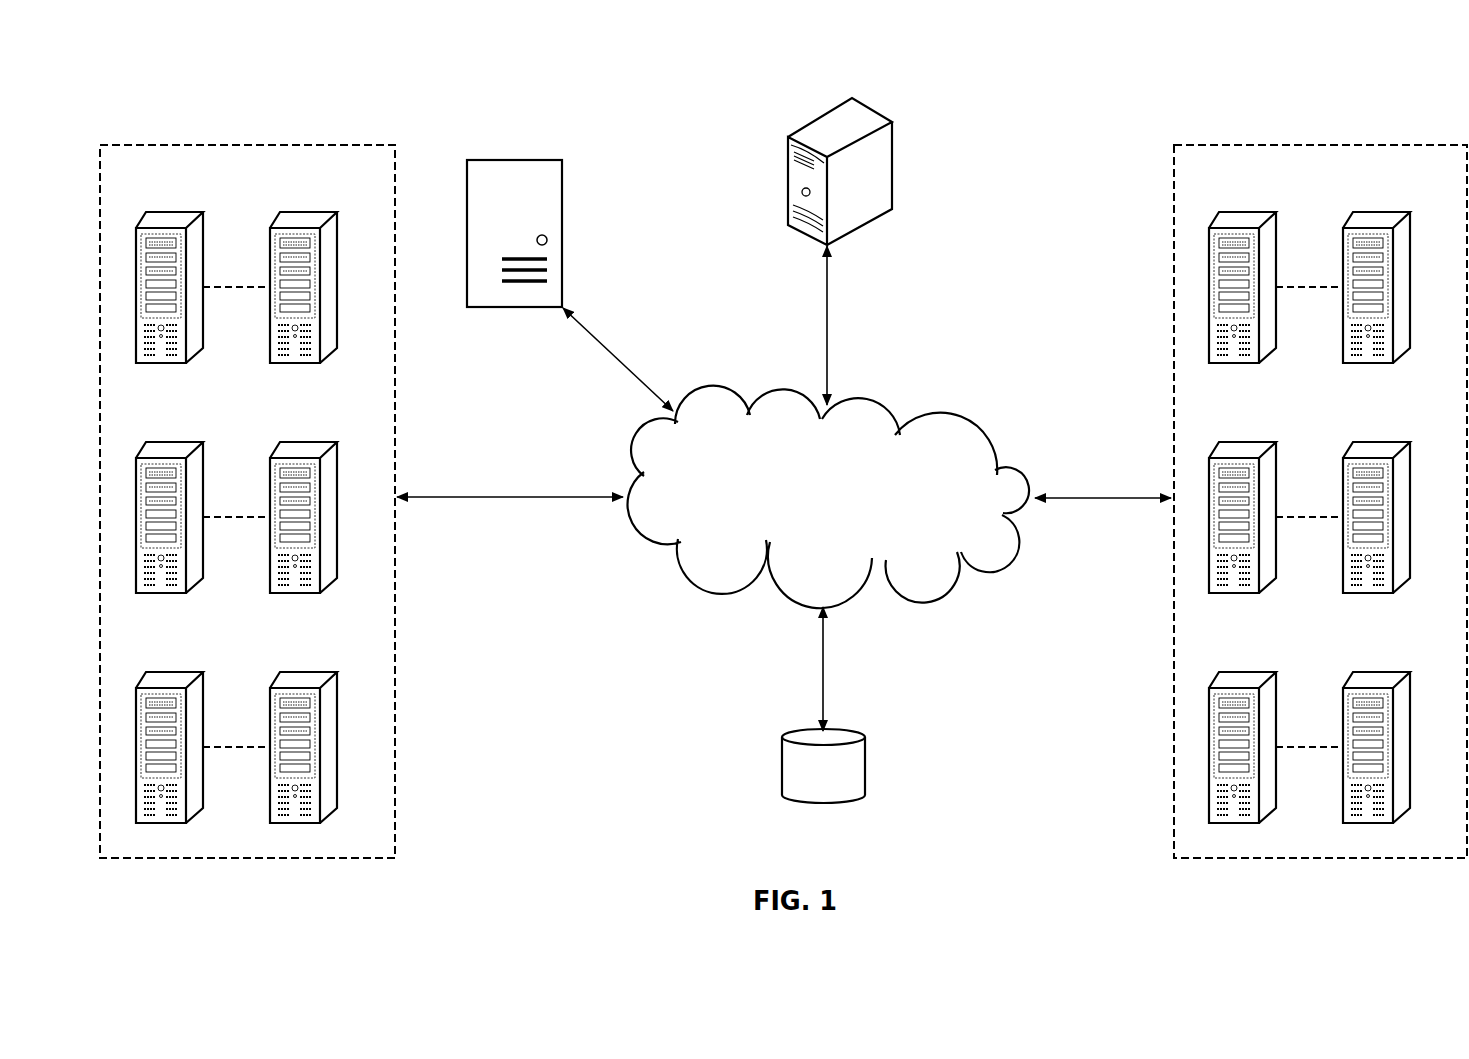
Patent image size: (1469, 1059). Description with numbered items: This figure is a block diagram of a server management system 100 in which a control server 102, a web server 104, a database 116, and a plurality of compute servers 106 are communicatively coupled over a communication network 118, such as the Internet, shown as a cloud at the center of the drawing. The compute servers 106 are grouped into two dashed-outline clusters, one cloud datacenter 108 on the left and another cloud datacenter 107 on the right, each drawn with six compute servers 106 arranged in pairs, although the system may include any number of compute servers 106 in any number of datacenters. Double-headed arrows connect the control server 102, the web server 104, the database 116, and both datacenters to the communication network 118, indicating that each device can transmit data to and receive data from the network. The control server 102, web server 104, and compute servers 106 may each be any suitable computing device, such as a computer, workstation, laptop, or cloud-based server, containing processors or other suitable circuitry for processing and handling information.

The server management system 100 is at (286, 52).
The control server 102 is at (488, 160).
The web server 104 is at (852, 98).
The compute servers 106 is at (787, 501).
The cloud datacenter 107 is at (1316, 145).
The cloud datacenter 108 is at (243, 145).
The database 116 is at (851, 733).
The communication network 118 is at (867, 397).